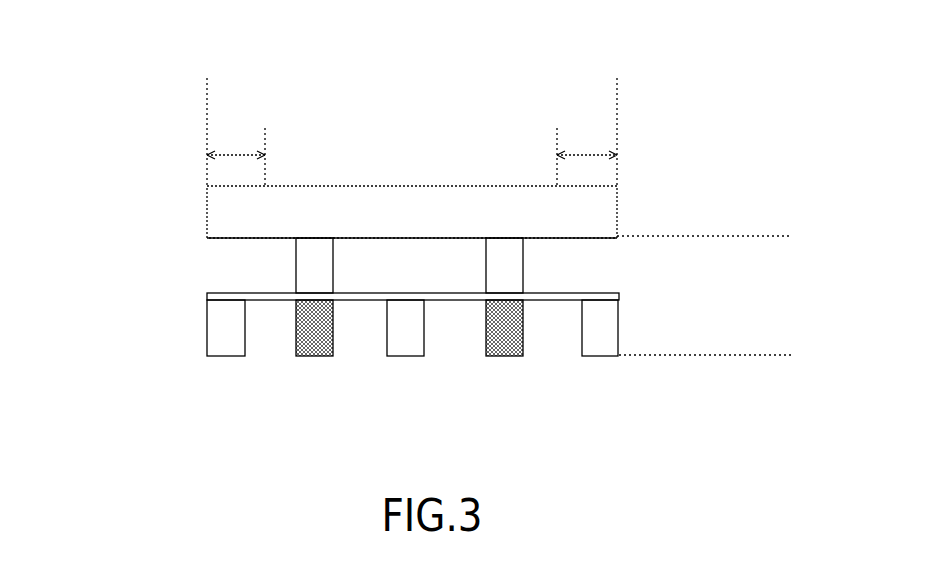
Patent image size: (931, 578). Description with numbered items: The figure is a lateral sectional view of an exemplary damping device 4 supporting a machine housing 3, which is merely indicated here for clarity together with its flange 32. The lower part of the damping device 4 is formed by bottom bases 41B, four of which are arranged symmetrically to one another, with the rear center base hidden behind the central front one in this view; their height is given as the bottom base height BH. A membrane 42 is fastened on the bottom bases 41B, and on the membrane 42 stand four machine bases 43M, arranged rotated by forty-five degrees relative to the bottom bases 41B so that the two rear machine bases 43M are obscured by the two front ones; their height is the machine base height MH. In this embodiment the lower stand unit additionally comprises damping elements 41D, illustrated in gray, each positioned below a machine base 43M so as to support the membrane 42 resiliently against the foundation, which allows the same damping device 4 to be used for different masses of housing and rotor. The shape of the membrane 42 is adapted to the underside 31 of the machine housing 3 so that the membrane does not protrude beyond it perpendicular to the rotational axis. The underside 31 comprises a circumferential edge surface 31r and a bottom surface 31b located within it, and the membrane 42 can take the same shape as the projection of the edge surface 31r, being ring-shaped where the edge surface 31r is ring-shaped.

The machine housing 3 is at (412, 212).
The flange 32 is at (432, 223).
The underside of the machine housing 31 is at (207, 78).
The bottom surface of the underside 31b is at (557, 128).
The edge surface of the underside 31r is at (237, 146).
The machine base 43M is at (290, 268).
The height of machine base MH is at (367, 240).
The membrane 42 is at (281, 308).
The bottom base 41B is at (226, 364).
The damping element 41D is at (312, 364).
The height of bottom base BH is at (207, 356).
The damping device 4 is at (745, 240).